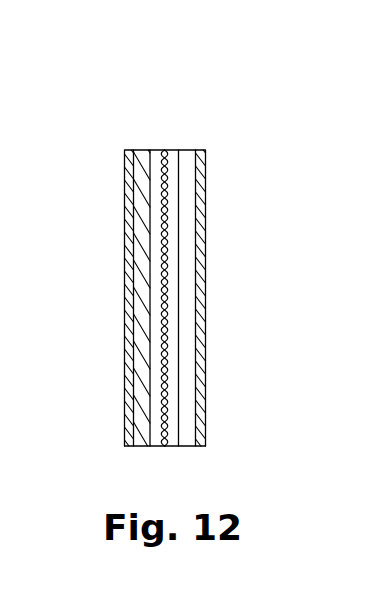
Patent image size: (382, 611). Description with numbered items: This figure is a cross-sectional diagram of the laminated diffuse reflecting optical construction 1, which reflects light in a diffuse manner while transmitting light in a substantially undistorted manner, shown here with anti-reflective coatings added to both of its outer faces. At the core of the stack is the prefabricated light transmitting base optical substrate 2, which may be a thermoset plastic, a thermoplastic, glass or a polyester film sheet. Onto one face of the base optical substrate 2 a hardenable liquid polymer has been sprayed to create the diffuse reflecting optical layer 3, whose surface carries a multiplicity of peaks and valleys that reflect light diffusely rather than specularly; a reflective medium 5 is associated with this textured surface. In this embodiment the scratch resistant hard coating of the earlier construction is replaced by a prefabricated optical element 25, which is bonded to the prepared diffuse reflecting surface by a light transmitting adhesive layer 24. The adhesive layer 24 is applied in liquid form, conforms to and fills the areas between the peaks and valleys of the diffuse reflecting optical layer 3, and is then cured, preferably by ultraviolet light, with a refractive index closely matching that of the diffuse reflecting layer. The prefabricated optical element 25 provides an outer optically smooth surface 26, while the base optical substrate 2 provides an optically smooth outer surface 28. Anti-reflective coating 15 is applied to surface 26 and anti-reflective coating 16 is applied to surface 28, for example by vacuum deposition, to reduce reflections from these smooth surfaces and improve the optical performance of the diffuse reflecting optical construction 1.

The diffuse reflecting optical construction 1 is at (107, 95).
The base optical substrate 2 is at (189, 152).
The diffuse reflecting optical layer 3 is at (172, 152).
The reflective medium 5 is at (163, 152).
The anti-reflective coating 15 is at (130, 243).
The anti-reflective coating 16 is at (205, 253).
The light transmitting adhesive layer 24 is at (153, 157).
The prefabricated optical element 25 is at (138, 158).
The outer optically smooth surface 26 is at (134, 438).
The outer surface 28 is at (196, 438).